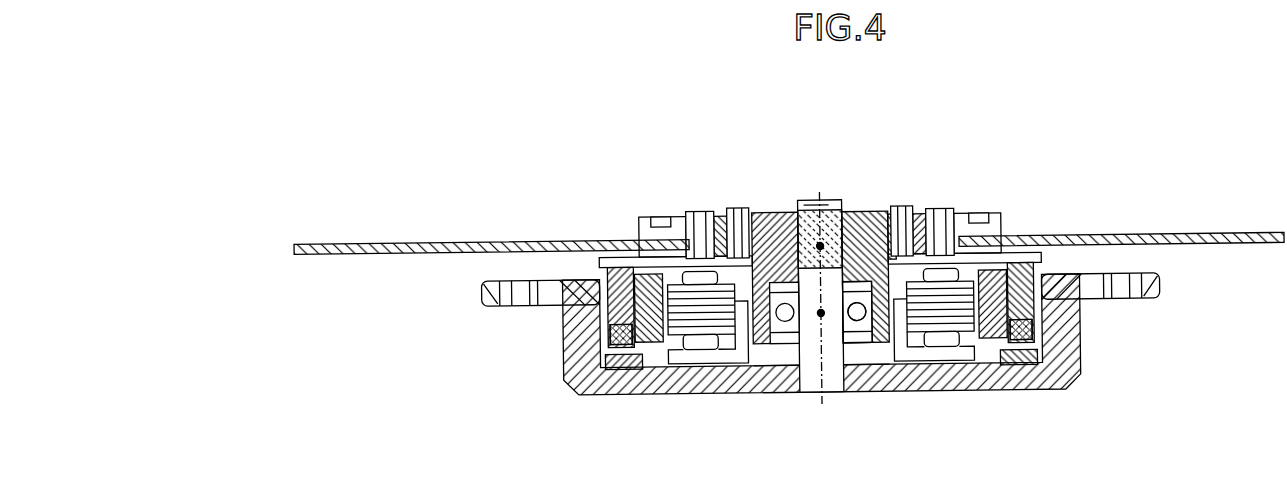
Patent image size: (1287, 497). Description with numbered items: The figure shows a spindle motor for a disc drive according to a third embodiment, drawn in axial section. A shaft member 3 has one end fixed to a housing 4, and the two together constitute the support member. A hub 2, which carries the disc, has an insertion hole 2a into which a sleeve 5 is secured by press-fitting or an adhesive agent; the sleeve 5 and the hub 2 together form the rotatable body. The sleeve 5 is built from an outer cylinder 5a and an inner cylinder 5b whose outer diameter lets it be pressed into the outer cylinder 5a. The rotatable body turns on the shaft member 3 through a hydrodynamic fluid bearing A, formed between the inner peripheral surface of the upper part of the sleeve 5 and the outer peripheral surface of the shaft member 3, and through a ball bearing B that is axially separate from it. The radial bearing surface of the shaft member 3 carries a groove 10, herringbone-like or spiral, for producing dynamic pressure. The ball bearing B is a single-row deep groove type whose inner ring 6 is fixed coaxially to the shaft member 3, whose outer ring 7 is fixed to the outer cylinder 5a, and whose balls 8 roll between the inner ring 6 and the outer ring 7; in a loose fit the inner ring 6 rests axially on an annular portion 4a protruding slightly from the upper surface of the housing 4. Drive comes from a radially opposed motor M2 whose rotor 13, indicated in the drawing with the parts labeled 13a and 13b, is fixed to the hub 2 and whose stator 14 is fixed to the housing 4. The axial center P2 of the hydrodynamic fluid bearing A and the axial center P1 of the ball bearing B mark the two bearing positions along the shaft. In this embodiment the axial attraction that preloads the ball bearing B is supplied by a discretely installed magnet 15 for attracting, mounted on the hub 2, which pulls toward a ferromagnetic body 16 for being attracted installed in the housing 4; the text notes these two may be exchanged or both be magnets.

The hub 2 is at (1012, 233).
The insertion hole 2a is at (890, 209).
The shaft member 3 is at (820, 200).
The housing 4 is at (697, 392).
The annular portion 4a is at (786, 378).
The sleeve 5 is at (819, 216).
The outer cylinder 5a is at (792, 133).
The inner cylinder 5b is at (778, 208).
The inner ring 6 is at (853, 392).
The outer ring 7 is at (905, 360).
The balls 8 is at (876, 335).
The groove for producing dynamic pressure 10 is at (842, 208).
The rotor 13 is at (701, 333).
The stator core 13a is at (748, 328).
The stator coil 13b is at (700, 286).
The stator 14 is at (655, 300).
The magnet for attracting 15 is at (1082, 355).
The ferromagnetic body for being attracted 16 is at (1018, 370).
The hydrodynamic fluid bearing A is at (808, 207).
The ball bearing B is at (889, 351).
The motor M2 is at (681, 361).
The axial center of the ball bearing P1 is at (821, 316).
The axial center of the hydrodynamic fluid bearing P2 is at (824, 246).